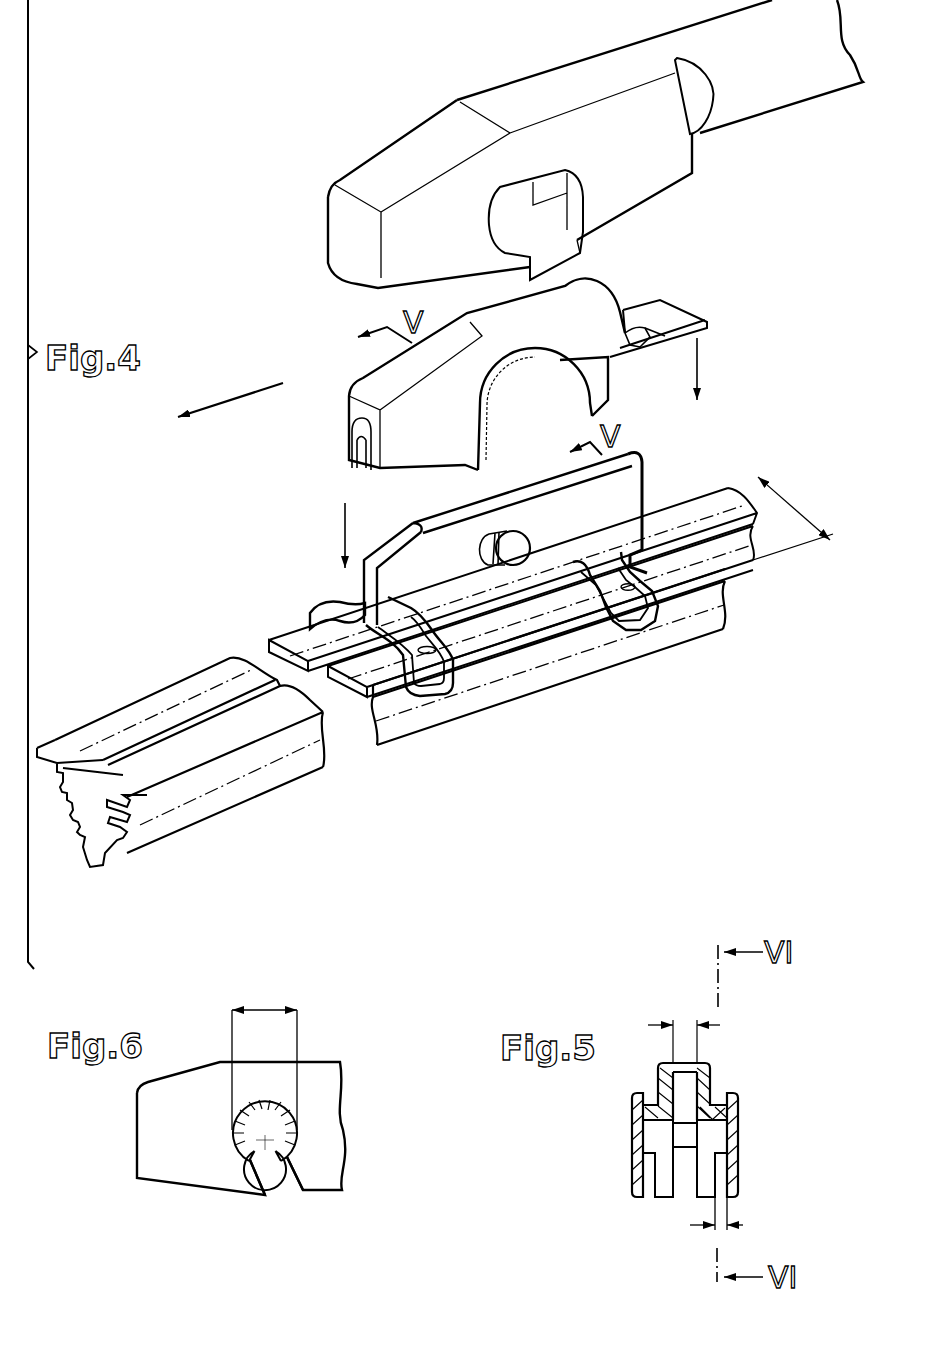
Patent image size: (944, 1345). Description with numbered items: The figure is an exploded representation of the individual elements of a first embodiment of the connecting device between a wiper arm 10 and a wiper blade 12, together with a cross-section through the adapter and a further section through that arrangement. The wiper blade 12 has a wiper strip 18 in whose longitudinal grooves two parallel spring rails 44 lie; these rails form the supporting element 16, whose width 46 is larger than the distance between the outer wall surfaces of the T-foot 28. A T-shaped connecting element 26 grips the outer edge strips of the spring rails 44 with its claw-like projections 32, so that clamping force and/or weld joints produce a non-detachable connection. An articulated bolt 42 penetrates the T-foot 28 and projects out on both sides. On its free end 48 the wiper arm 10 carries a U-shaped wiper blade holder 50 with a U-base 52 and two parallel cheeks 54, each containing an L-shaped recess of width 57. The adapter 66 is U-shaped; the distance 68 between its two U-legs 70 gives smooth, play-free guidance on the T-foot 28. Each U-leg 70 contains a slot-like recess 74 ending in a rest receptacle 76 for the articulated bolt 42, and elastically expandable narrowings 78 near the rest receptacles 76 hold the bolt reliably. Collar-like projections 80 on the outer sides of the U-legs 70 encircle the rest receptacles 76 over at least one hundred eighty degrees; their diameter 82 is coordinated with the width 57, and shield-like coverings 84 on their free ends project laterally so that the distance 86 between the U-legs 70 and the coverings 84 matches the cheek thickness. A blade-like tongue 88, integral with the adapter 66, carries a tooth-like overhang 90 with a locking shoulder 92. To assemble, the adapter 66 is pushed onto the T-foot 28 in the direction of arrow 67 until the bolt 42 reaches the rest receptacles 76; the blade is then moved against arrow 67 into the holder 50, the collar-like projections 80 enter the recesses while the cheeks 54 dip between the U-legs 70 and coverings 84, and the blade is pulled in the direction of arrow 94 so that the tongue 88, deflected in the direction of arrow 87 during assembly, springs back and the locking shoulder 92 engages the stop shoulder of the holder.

In FIG. 4, the wiper arm 10 is at (830, 102).
In FIG. 4, the wiper blade 12 is at (62, 728).
In FIG. 4, the supporting element 16 is at (217, 650).
In FIG. 4, the wiper strip 18 is at (100, 878).
In FIG. 4, the connecting element 26 is at (655, 487).
In FIG. 4, the T-foot 28 is at (643, 478).
In FIG. 4, the claw-like projections 32 is at (330, 604).
In FIG. 4, the articulated bolt 42 is at (517, 575).
In FIG. 4, the spring rails 44 is at (716, 492).
In FIG. 4, the width of the supporting element 46 is at (787, 500).
In FIG. 4, the free end of the wiper arm 48 is at (341, 155).
In FIG. 4, the wiper blade holder 50 is at (557, 62).
In FIG. 4, the U-base 52 is at (510, 110).
In FIG. 4, the U-legs or cheeks 54 is at (655, 188).
In FIG. 4, the width of the recess 57 is at (548, 272).
In FIG. 4, the adapter 66 is at (378, 350).
In FIG. 4, the arrow 67 is at (343, 524).
In FIG. 5, the distance between the U-legs 68 is at (683, 1020).
In FIG. 4, the U-legs 70 is at (365, 458).
In FIG. 6, the U-legs 70 is at (170, 1168).
In FIG. 5, the U-legs 70 is at (698, 1193).
In FIG. 6, the slot-like recesses 74 is at (283, 1183).
In FIG. 6, the rest receptacles 76 is at (265, 1127).
In FIG. 6, the narrowings 78 is at (277, 1150).
In FIG. 6, the collar-like projections 80 is at (297, 1127).
In FIG. 5, the collar-like projections 80 is at (650, 1105).
In FIG. 6, the diameter of the collar-like projections 82 is at (266, 1010).
In FIG. 4, the shield-like coverings 84 is at (483, 457).
In FIG. 5, the shield-like coverings 84 is at (636, 1140).
In FIG. 5, the distance between U-leg outer sides and covering inner walls 86 is at (728, 1222).
In FIG. 4, the arrow 87 is at (699, 355).
In FIG. 4, the blade-like tongue 88 is at (673, 310).
In FIG. 4, the tooth-like overhang 90 is at (643, 335).
In FIG. 4, the locking shoulder 92 is at (654, 325).
In FIG. 4, the arrow 94 is at (243, 391).